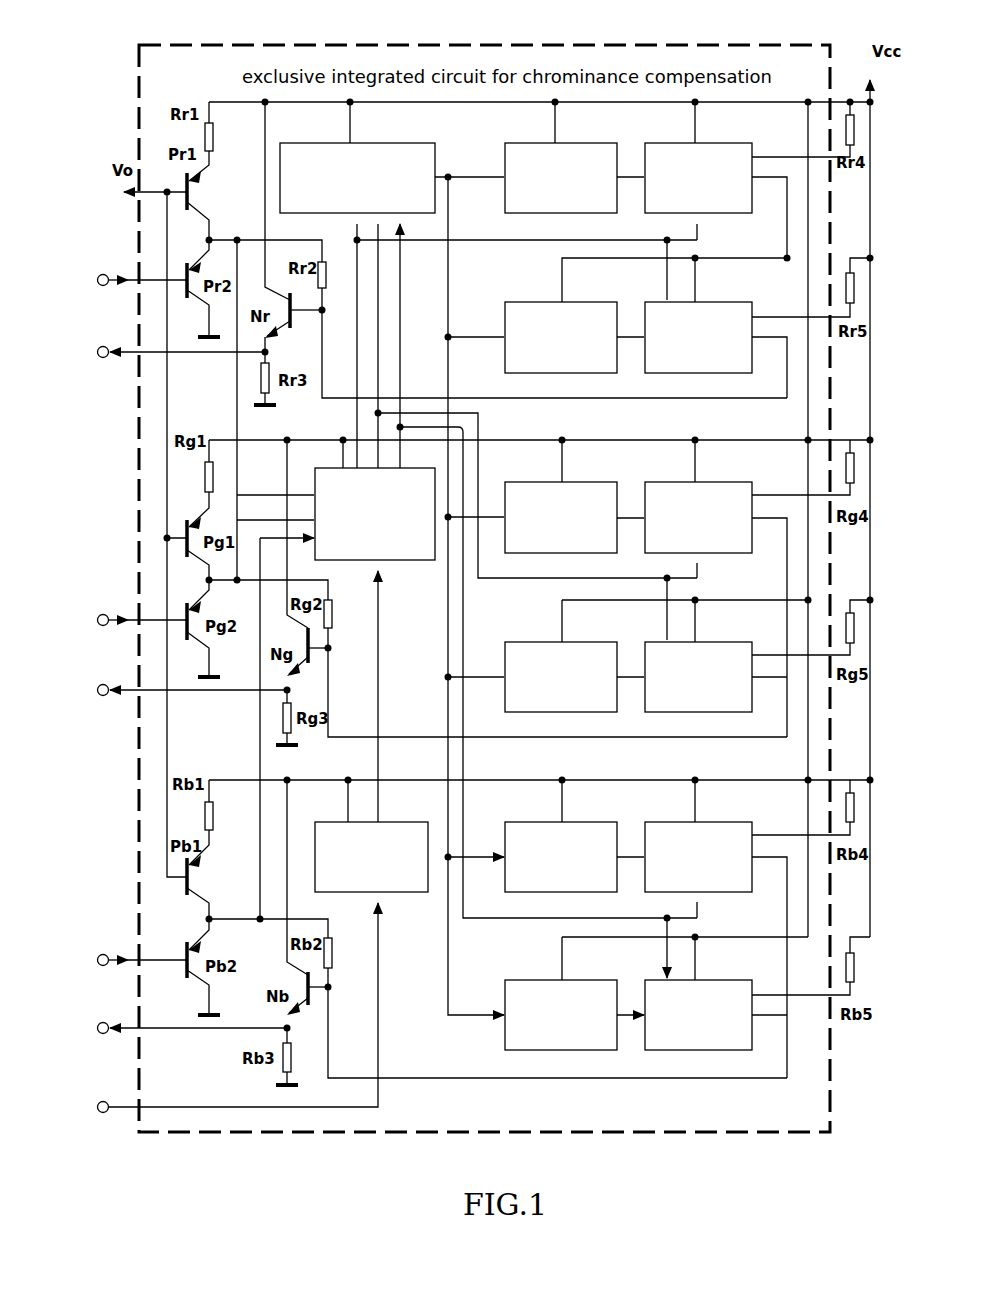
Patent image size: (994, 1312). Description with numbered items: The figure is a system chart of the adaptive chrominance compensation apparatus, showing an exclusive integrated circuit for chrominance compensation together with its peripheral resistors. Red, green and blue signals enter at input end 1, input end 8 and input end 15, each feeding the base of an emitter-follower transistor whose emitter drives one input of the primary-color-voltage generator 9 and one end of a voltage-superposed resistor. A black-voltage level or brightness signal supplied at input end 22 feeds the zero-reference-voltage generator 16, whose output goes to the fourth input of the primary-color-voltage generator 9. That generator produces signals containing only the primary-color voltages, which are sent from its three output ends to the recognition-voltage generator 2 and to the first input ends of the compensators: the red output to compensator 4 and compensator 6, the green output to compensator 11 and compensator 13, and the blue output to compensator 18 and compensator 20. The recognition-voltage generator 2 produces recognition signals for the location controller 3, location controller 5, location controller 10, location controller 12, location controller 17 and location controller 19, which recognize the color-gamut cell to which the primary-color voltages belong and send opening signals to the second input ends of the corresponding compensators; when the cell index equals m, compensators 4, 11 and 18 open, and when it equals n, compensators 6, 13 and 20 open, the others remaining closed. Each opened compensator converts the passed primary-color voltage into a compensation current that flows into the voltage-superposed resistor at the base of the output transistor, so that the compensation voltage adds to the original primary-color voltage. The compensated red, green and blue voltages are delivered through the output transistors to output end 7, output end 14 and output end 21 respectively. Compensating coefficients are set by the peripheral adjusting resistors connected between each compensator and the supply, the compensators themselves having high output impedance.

The input end 1 is at (107, 275).
The recognition-voltage generator 2 is at (384, 143).
The location controller 3 is at (582, 143).
The compensator Crm 4 is at (723, 143).
The location controller 5 is at (582, 302).
The compensator Crn 6 is at (718, 302).
The output end 7 is at (107, 347).
The input end 8 is at (107, 615).
The primary-color-voltage generator 9 is at (420, 468).
The location controller 10 is at (580, 482).
The compensator Cgm 11 is at (714, 482).
The location controller 12 is at (580, 642).
The compensator Cgn 13 is at (714, 642).
The output end 14 is at (107, 685).
The input end 15 is at (107, 955).
The zero-reference-voltage generator 16 is at (402, 822).
The location controller 17 is at (580, 822).
The compensator Cbm 18 is at (714, 822).
The location controller 19 is at (580, 980).
The compensator Cbn 20 is at (714, 980).
The output end 21 is at (107, 1023).
The input end 22 is at (107, 1102).